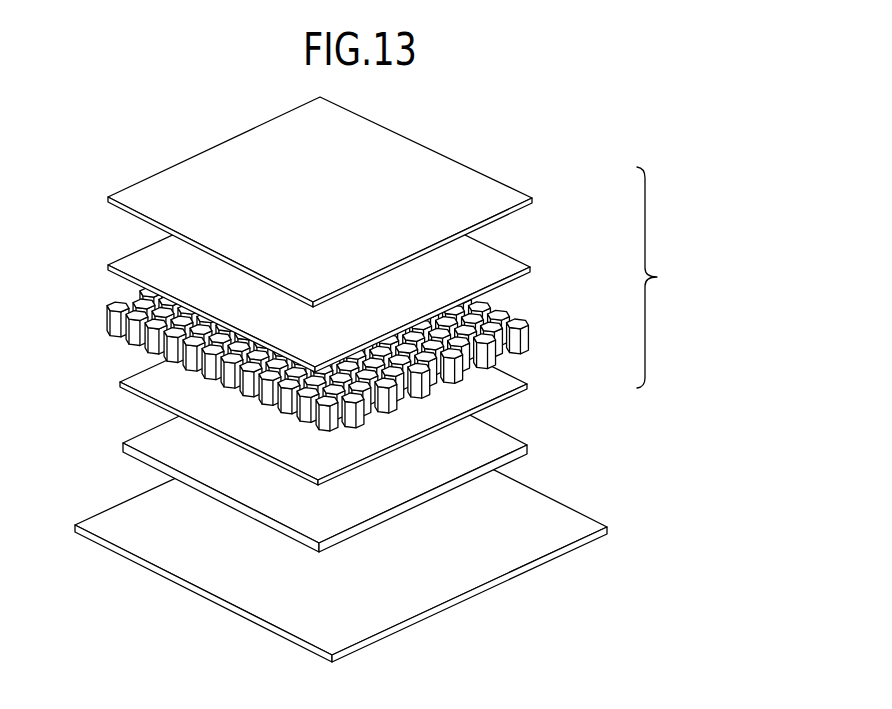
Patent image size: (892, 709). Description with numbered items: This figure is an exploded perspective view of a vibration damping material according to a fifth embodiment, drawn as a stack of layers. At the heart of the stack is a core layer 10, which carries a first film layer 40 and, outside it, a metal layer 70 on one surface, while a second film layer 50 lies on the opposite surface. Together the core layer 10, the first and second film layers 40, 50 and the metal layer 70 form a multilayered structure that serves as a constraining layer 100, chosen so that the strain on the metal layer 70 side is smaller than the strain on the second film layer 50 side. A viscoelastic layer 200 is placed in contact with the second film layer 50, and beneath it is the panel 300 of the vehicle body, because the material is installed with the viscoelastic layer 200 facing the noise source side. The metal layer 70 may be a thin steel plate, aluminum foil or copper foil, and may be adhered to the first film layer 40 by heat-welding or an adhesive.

The core layer 10 is at (517, 334).
The first film layer 40 is at (532, 268).
The second film layer 50 is at (530, 387).
The metal layer 70 is at (534, 200).
The constraining layer 100 is at (675, 277).
The viscoelastic layer 200 is at (528, 442).
The panel 300 is at (583, 545).